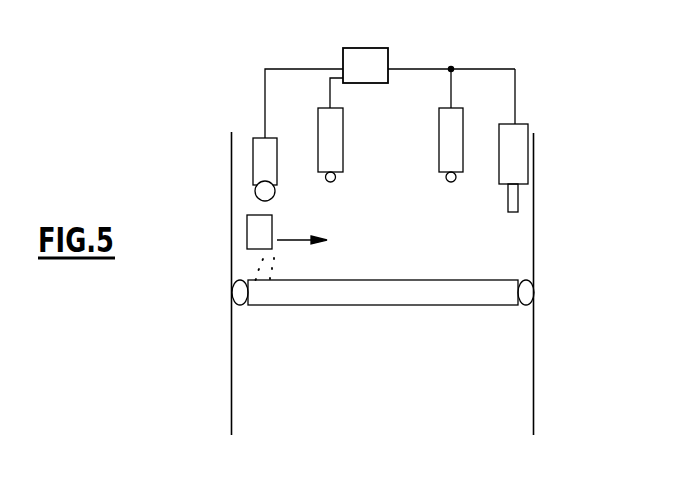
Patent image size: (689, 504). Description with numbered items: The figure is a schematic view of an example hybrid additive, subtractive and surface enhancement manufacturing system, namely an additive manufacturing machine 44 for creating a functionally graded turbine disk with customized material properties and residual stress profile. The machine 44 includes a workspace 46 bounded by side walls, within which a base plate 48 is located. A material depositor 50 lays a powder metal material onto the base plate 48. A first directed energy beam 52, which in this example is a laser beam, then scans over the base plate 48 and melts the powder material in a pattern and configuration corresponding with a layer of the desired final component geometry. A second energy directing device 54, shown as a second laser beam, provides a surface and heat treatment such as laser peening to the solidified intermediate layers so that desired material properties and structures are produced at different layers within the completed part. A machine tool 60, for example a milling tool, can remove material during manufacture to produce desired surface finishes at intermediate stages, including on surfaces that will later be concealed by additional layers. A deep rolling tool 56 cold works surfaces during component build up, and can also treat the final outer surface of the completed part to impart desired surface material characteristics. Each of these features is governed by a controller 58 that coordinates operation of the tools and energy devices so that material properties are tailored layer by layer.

The additive manufacturing machine 44 is at (231, 208).
The workspace 46 is at (393, 213).
The base plate 48 is at (353, 295).
The material depositor 50 is at (257, 232).
The first directed energy beam 52 is at (328, 142).
The second energy directing device 54 is at (450, 126).
The deep rolling tool 56 is at (261, 148).
The controller 58 is at (384, 58).
The machine tool 60 is at (522, 155).